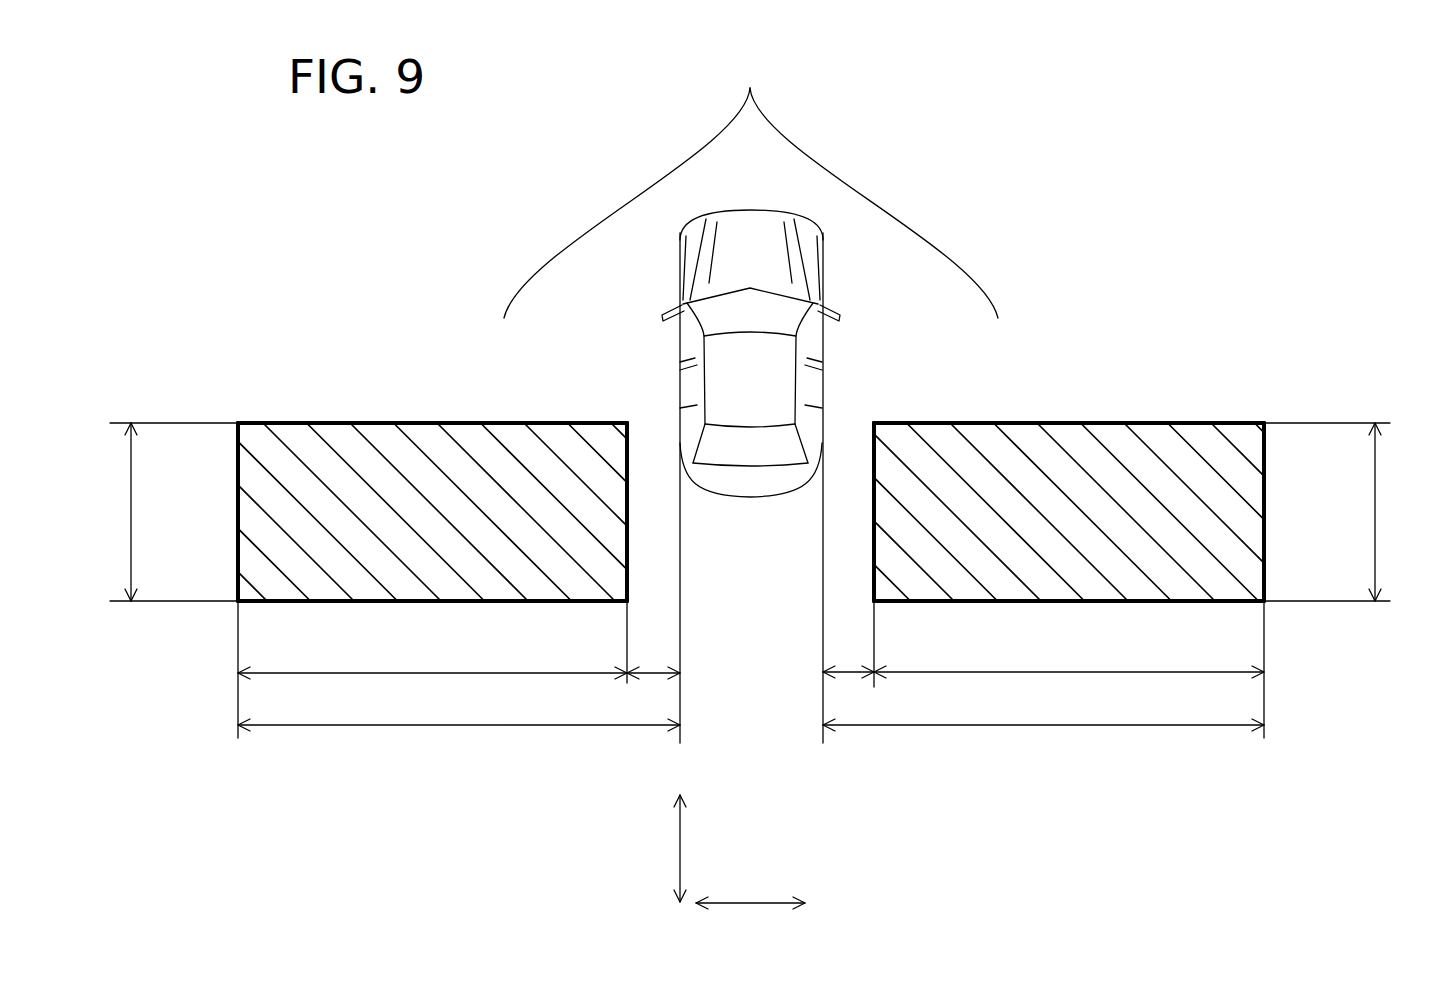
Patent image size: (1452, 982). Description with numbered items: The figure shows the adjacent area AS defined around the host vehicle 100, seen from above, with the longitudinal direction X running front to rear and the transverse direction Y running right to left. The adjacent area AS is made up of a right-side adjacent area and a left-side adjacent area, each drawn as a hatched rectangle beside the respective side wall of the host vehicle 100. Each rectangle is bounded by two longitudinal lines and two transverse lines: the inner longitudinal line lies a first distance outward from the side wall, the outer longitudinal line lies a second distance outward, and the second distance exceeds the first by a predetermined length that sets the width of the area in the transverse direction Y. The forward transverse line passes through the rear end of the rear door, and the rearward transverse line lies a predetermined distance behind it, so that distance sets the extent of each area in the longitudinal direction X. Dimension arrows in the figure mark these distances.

The adjacent area AS is at (751, 188).
The host vehicle 100 is at (750, 210).
The longitudinal direction X is at (678, 850).
The transverse direction Y is at (751, 905).